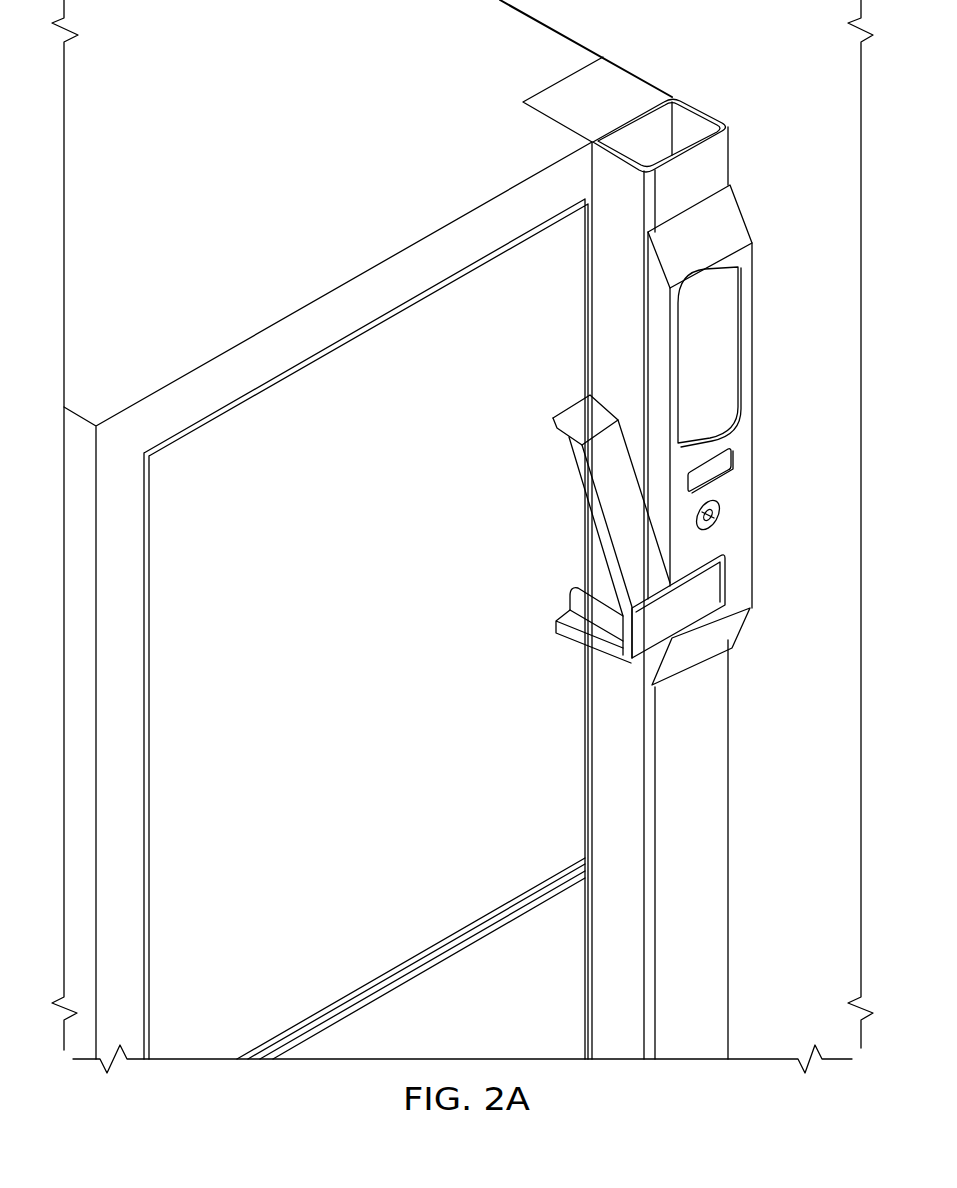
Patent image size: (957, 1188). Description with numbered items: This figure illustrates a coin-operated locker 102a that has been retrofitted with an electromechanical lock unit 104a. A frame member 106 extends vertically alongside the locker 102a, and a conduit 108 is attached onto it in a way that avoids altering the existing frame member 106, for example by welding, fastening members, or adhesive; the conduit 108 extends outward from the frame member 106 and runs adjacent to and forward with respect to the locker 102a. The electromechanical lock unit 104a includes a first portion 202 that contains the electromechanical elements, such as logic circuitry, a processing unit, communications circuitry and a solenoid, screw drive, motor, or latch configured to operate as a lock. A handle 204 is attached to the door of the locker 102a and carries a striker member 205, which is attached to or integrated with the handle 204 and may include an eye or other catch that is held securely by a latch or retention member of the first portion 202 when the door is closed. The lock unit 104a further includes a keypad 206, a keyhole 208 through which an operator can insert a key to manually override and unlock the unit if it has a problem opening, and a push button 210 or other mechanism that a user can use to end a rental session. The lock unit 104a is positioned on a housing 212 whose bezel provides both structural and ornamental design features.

The locker 102a is at (393, 673).
The electromechanical lock unit 104a is at (758, 273).
The frame member 106 is at (630, 78).
The conduit 108 is at (718, 160).
The first portion 202 is at (752, 425).
The handle 204 is at (620, 527).
The striker member 205 is at (722, 585).
The keypad 206 is at (730, 347).
The keyhole 208 is at (718, 520).
The push button 210 is at (710, 482).
The housing 212 is at (732, 213).